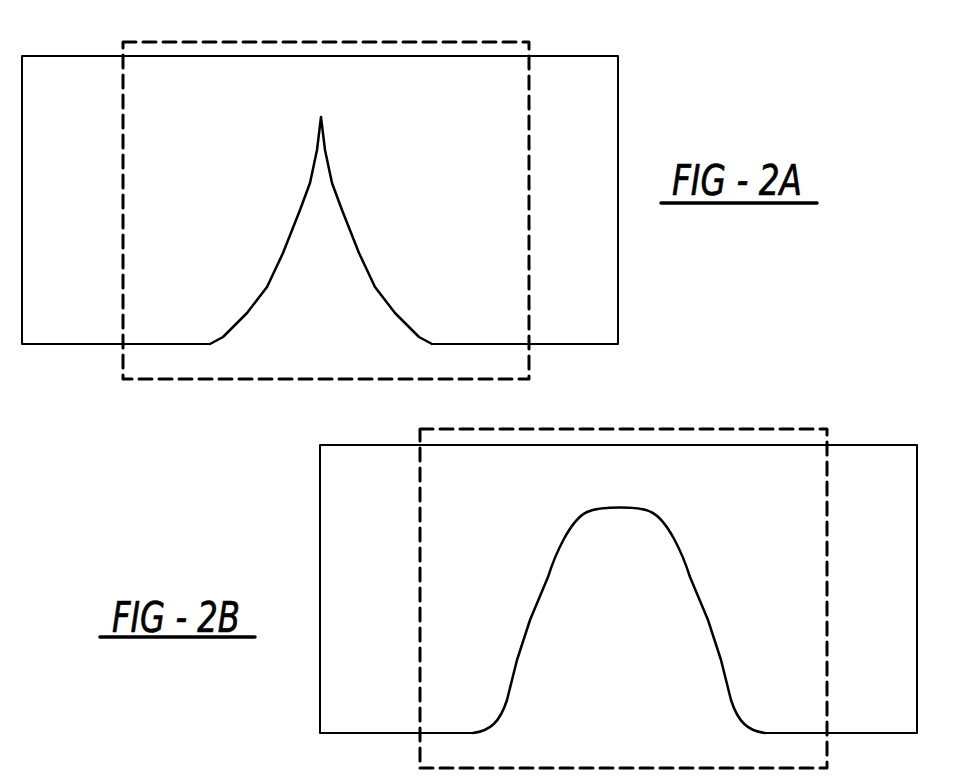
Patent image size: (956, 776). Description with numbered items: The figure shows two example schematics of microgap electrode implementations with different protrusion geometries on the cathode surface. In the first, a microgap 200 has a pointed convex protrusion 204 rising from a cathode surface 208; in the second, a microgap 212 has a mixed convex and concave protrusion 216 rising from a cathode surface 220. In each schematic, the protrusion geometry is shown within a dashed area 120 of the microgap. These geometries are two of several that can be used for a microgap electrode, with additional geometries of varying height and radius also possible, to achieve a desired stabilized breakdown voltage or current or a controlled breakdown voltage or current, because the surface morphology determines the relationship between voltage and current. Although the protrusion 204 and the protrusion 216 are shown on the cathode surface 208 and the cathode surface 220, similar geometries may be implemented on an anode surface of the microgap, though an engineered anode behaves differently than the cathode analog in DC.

In FIG. 2A, the area 120 is at (123, 42).
In FIG. 2B, the area 120 is at (773, 429).
In FIG. 2A, the microgap 200 is at (682, 83).
In FIG. 2A, the pointed convex protrusion 204 is at (282, 254).
In FIG. 2A, the cathode surface 208 is at (62, 345).
In FIG. 2B, the microgap 212 is at (230, 527).
In FIG. 2B, the mixed convex and concave protrusion 216 is at (547, 578).
In FIG. 2B, the cathode surface 220 is at (347, 733).